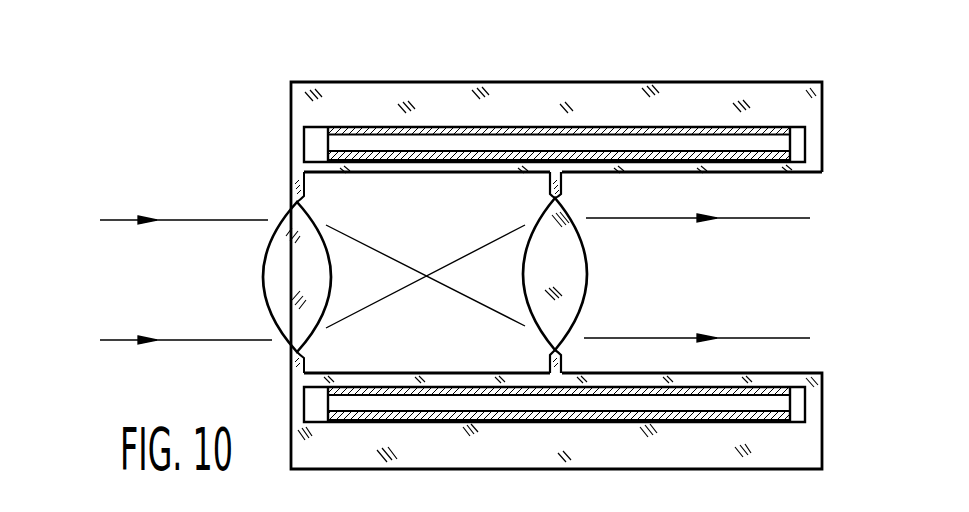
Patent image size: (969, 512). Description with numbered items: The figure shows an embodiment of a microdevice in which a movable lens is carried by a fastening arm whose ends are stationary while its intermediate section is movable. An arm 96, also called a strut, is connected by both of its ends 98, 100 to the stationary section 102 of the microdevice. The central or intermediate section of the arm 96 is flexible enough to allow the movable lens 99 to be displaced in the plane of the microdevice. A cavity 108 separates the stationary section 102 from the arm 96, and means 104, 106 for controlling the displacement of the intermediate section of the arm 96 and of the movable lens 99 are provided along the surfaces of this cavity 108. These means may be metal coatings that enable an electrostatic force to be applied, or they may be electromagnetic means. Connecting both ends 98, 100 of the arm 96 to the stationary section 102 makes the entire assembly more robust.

The arm 96 is at (752, 163).
The end of arm 98 is at (296, 145).
The movable lens 99 is at (548, 322).
The end of arm 100 is at (812, 148).
The stationary section 102 is at (343, 97).
The displacement control means 104 is at (392, 162).
The displacement control means 106 is at (502, 132).
The cavity 108 is at (660, 140).